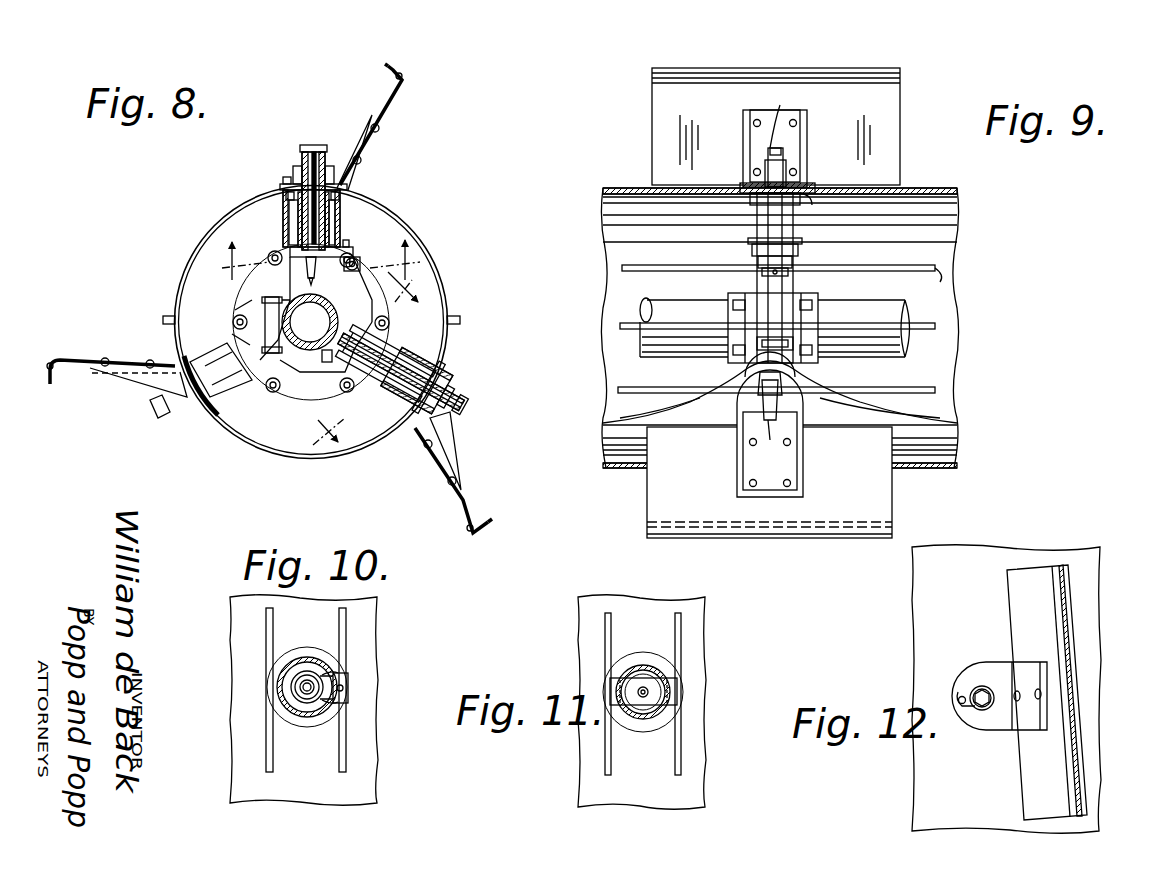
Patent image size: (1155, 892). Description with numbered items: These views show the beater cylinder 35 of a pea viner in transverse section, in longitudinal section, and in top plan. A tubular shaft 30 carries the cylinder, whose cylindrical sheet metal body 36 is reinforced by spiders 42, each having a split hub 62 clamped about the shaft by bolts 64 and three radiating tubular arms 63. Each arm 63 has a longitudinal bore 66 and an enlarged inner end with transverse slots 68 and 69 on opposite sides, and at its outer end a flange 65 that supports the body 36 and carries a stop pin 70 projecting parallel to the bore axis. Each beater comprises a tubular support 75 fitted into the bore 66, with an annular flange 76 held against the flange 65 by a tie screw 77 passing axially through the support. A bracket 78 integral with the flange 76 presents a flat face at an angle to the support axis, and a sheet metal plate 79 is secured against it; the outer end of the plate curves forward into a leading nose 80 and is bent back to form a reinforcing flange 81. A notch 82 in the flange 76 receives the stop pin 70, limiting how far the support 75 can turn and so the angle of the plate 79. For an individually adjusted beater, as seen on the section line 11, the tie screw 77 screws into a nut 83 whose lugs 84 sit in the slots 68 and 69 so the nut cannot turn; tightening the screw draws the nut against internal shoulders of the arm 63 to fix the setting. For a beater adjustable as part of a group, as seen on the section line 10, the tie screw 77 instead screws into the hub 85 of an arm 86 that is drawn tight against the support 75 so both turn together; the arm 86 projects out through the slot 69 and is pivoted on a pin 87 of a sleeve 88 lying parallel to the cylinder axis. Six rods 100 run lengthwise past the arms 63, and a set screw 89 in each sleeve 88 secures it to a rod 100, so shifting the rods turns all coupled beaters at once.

In FIG. 8, the section line 10— 10 is at (310, 260).
In FIG. 8, the section line 11— 11 is at (358, 360).
In FIG. 8, the tubular shaft 30 is at (311, 322).
In FIG. 9, the tubular shaft 30 is at (650, 304).
In FIG. 8, the beater cylinder 35 is at (202, 214).
In FIG. 9, the beater cylinder 35 is at (940, 185).
In FIG. 10, the beater cylinder 35 is at (380, 618).
In FIG. 11, the beater cylinder 35 is at (708, 630).
In FIG. 12, the beater cylinder 35 is at (990, 546).
In FIG. 8, the cylindrical sheet metal body 36 is at (190, 246).
In FIG. 9, the cylindrical sheet metal body 36 is at (620, 186).
In FIG. 10, the cylindrical sheet metal body 36 is at (372, 663).
In FIG. 11, the cylindrical sheet metal body 36 is at (578, 624).
In FIG. 12, the cylindrical sheet metal body 36 is at (916, 604).
In FIG. 8, the spider 42 is at (232, 388).
In FIG. 9, the spider 42 is at (796, 232).
In FIG. 10, the spider 42 is at (310, 652).
In FIG. 8, the hub 62 is at (236, 316).
In FIG. 9, the hub 62 is at (810, 296).
In FIG. 8, the tubular arm 63 is at (345, 208).
In FIG. 9, the tubular arm 63 is at (758, 213).
In FIG. 10, the tubular arm 63 is at (292, 663).
In FIG. 11, the tubular arm 63 is at (636, 670).
In FIG. 8, the bolt 64 is at (266, 345).
In FIG. 9, the bolt 64 is at (732, 308).
In FIG. 8, the flange 65 is at (342, 196).
In FIG. 9, the flange 65 is at (808, 196).
In FIG. 10, the flange 65 is at (306, 728).
In FIG. 11, the flange 65 is at (672, 720).
In FIG. 8, the longitudinal bore 66 is at (289, 226).
In FIG. 8, the slot 68 is at (272, 256).
In FIG. 10, the slot 68 is at (292, 697).
In FIG. 11, the slot 68 is at (658, 668).
In FIG. 8, the slot 69 is at (334, 300).
In FIG. 9, the slot 69 is at (746, 250).
In FIG. 10, the slot 69 is at (322, 678).
In FIG. 11, the slot 69 is at (622, 712).
In FIG. 8, the pin 70 is at (295, 170).
In FIG. 9, the pin 70 is at (788, 170).
In FIG. 12, the pin 70 is at (960, 696).
In FIG. 8, the tubular support 75 is at (294, 208).
In FIG. 8, the annular flange 76 is at (335, 182).
In FIG. 8, the tie screw 77 is at (306, 146).
In FIG. 9, the tie screw 77 is at (772, 280).
In FIG. 10, the tie screw 77 is at (310, 700).
In FIG. 11, the tie screw 77 is at (645, 698).
In FIG. 12, the tie screw 77 is at (984, 686).
In FIG. 8, the bracket 78 is at (368, 130).
In FIG. 9, the bracket 78 is at (745, 130).
In FIG. 12, the bracket 78 is at (990, 730).
In FIG. 8, the sheet metal plate 79 is at (392, 100).
In FIG. 9, the sheet metal plate 79 is at (878, 70).
In FIG. 12, the sheet metal plate 79 is at (1070, 588).
In FIG. 8, the leading nose 80 is at (404, 76).
In FIG. 12, the leading nose 80 is at (1080, 672).
In FIG. 8, the reinforcing flange 81 is at (392, 68).
In FIG. 12, the reinforcing flange 81 is at (1052, 600).
In FIG. 8, the notch 82 is at (282, 185).
In FIG. 9, the notch 82 is at (812, 188).
In FIG. 12, the notch 82 is at (960, 706).
In FIG. 8, the nut 83 is at (326, 364).
In FIG. 8, the lug 84 is at (392, 338).
In FIG. 9, the lug 84 is at (800, 340).
In FIG. 11, the lug 84 is at (678, 690).
In FIG. 8, the hub 85 is at (305, 276).
In FIG. 10, the hub 85 is at (302, 698).
In FIG. 8, the arm 86 is at (360, 255).
In FIG. 9, the arm 86 is at (795, 258).
In FIG. 10, the arm 86 is at (350, 684).
In FIG. 8, the pin 87 is at (346, 240).
In FIG. 9, the pin 87 is at (750, 250).
In FIG. 10, the pin 87 is at (350, 693).
In FIG. 8, the sleeve 88 is at (360, 262).
In FIG. 9, the sleeve 88 is at (760, 278).
In FIG. 10, the sleeve 88 is at (336, 702).
In FIG. 9, the set screw 89 is at (855, 298).
In FIG. 8, the rod 100 is at (268, 420).
In FIG. 9, the rod 100 is at (928, 280).
In FIG. 10, the rod 100 is at (276, 612).
In FIG. 11, the rod 100 is at (674, 778).